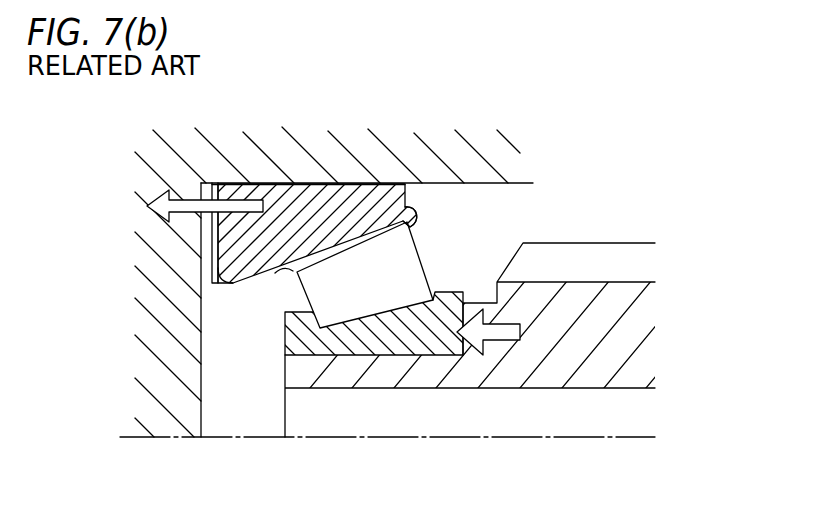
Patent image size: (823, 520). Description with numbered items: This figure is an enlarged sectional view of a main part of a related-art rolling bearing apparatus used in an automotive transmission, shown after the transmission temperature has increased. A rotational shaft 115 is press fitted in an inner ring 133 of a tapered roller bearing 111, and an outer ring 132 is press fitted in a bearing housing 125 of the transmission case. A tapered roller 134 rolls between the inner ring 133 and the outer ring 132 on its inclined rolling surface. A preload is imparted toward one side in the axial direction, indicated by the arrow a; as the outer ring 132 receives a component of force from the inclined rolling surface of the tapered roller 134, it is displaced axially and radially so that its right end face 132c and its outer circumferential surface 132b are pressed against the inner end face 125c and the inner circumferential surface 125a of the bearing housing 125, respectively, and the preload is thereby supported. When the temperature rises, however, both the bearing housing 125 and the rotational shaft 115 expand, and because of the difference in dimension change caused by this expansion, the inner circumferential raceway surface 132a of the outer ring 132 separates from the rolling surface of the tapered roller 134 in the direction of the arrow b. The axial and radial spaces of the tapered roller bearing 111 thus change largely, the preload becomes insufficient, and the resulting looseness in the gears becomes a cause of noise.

The bearing housing 125 is at (428, 156).
The inner circumferential surface 125a is at (505, 187).
The inner end face 125c is at (201, 290).
The outer ring 132 is at (218, 247).
The inner circumferential raceway surface 132a is at (417, 227).
The outer circumferential surface 132b is at (320, 183).
The right end face 132c is at (210, 233).
The inner ring 133 is at (285, 328).
The tapered roller 134 is at (422, 270).
The rotational shaft 115 is at (630, 331).
The tapered roller bearing 111 is at (258, 299).
The arrow a is at (498, 325).
The arrow b is at (188, 200).